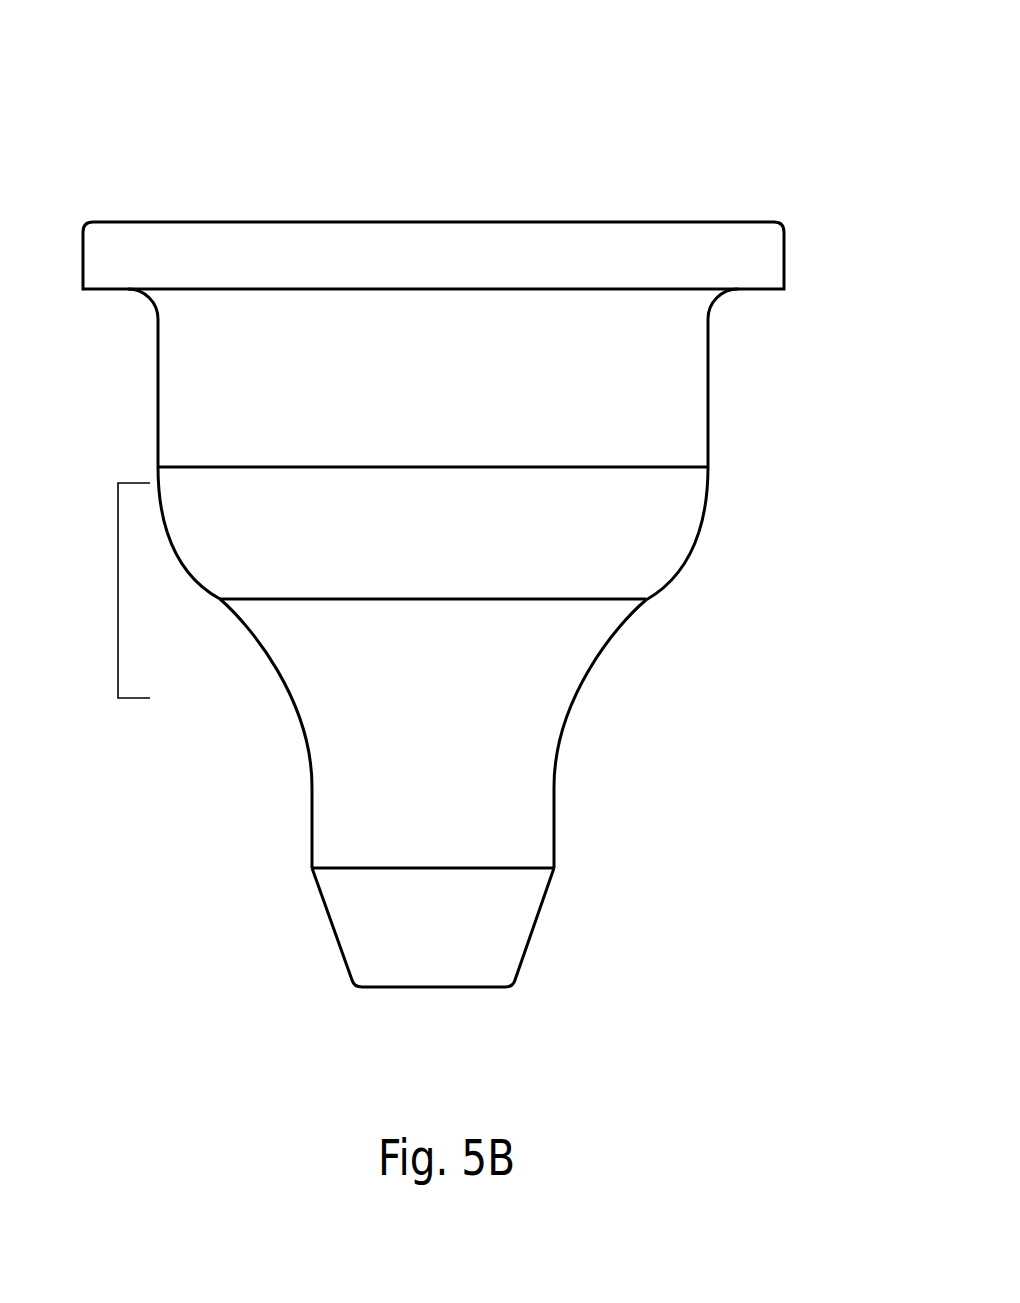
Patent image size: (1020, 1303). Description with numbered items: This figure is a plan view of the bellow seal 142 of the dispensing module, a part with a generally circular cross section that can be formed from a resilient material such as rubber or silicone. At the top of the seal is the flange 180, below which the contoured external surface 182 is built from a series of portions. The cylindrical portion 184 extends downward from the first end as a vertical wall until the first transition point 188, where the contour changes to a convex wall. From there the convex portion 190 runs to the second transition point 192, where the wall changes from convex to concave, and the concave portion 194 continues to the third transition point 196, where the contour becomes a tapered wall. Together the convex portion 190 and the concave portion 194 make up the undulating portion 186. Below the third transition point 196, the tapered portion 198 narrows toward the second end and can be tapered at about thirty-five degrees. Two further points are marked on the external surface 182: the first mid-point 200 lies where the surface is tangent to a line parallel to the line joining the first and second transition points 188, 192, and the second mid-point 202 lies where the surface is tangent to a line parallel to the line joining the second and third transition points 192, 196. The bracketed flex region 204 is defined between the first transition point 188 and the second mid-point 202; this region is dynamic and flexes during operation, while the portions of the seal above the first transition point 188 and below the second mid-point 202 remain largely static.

The bellow seal 142 is at (144, 124).
The flange 180 is at (155, 265).
The external surface 182 is at (732, 329).
The cylindrical portion 184 is at (688, 355).
The undulating portion 186 is at (652, 668).
The first transition point 188 is at (708, 467).
The convex portion 190 is at (690, 551).
The second transition point 192 is at (645, 600).
The concave portion 194 is at (556, 783).
The third transition point 196 is at (552, 870).
The tapered portion 198 is at (540, 922).
The first mid-point 200 is at (708, 498).
The second mid-point 202 is at (578, 703).
The flex region 204 is at (118, 570).